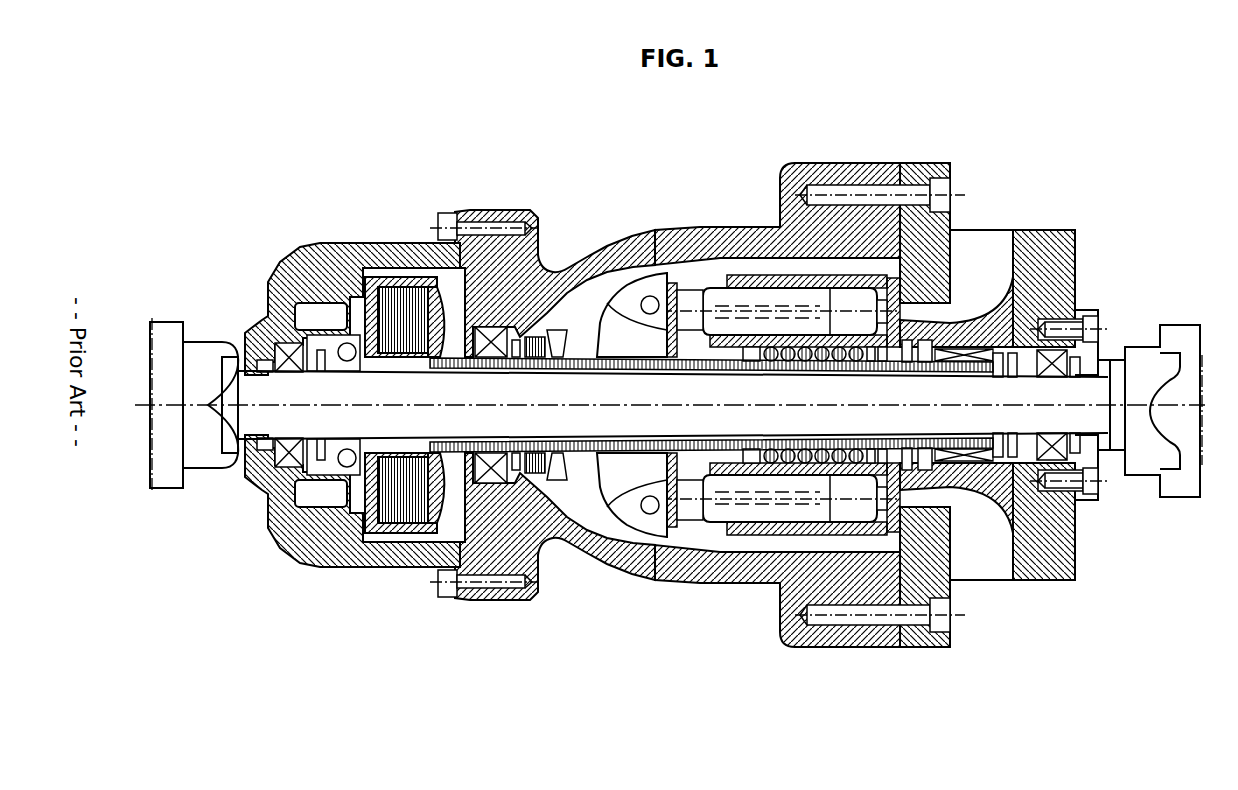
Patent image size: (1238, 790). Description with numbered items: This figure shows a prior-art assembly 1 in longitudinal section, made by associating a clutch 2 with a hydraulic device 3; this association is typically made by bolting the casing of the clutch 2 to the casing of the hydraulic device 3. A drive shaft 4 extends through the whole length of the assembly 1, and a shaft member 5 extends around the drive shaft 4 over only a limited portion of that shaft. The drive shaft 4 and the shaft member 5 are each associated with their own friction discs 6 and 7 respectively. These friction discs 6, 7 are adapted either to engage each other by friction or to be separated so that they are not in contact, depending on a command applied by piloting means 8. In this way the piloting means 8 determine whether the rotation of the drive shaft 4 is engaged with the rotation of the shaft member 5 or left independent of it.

The assembly 1 is at (946, 93).
The clutch 2 is at (338, 200).
The hydraulic device 3 is at (748, 150).
The drive shaft 4 is at (262, 417).
The shaft member 5 is at (553, 450).
The friction discs 6 is at (390, 478).
The friction discs 7 is at (383, 523).
The piloting means 8 is at (317, 495).